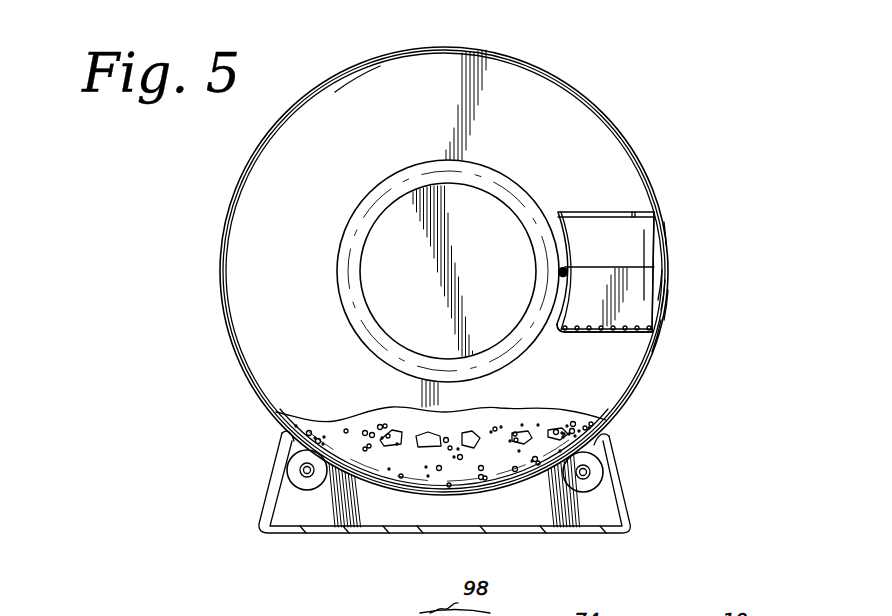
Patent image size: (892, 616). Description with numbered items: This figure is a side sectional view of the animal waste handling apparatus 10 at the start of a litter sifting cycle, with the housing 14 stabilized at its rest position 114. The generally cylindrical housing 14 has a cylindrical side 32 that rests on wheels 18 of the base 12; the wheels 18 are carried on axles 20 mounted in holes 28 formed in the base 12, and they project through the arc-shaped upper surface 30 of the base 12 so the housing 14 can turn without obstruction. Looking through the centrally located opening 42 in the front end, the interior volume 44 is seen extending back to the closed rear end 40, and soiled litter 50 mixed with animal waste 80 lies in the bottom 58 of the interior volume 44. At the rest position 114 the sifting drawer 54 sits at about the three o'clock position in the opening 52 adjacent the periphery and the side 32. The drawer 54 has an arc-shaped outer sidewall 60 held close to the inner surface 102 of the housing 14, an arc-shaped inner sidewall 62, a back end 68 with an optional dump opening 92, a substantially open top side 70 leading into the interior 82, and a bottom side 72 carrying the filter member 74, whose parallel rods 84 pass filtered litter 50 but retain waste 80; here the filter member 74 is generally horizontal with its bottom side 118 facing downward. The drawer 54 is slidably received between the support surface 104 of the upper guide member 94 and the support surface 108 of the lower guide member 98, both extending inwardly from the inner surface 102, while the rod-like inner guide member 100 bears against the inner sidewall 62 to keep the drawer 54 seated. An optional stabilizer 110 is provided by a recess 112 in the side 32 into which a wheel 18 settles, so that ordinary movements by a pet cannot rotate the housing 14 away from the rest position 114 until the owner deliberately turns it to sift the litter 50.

The apparatus 10 is at (292, 61).
The inner surface 102 is at (359, 81).
The cylindrical side 32 is at (248, 158).
The housing 14 is at (220, 243).
The interior volume 44 is at (383, 304).
The opening 42 is at (474, 200).
The inner sidewall 62 is at (538, 214).
The rear end 40 is at (484, 260).
The inner guide member 100 is at (558, 272).
The support surface 104 is at (605, 272).
The opening 52 is at (645, 213).
The open top side 70 is at (561, 210).
The interior 82 is at (582, 228).
The upper guide member 94 is at (655, 212).
The rest position 114 is at (674, 232).
The opening 92 is at (650, 240).
The outer sidewall 60 is at (670, 258).
The sifting drawer 54 is at (650, 285).
The back end 68 is at (650, 300).
The support surface 108 is at (668, 322).
The lower guide member 98 is at (660, 338).
The bottom side 118 is at (615, 340).
The rods 84 is at (566, 336).
The bottom side 72 is at (578, 336).
The filter member 74 is at (605, 342).
The upper surface 30 is at (300, 425).
The animal waste 80 is at (418, 432).
The litter 50 is at (610, 423).
The recess 112 is at (603, 450).
The bottom 58 is at (399, 472).
The stabilizer 110 is at (551, 452).
The base 12 is at (613, 533).
The wheels 18 is at (290, 464).
The axles 20 is at (300, 473).
The holes 28 is at (303, 474).